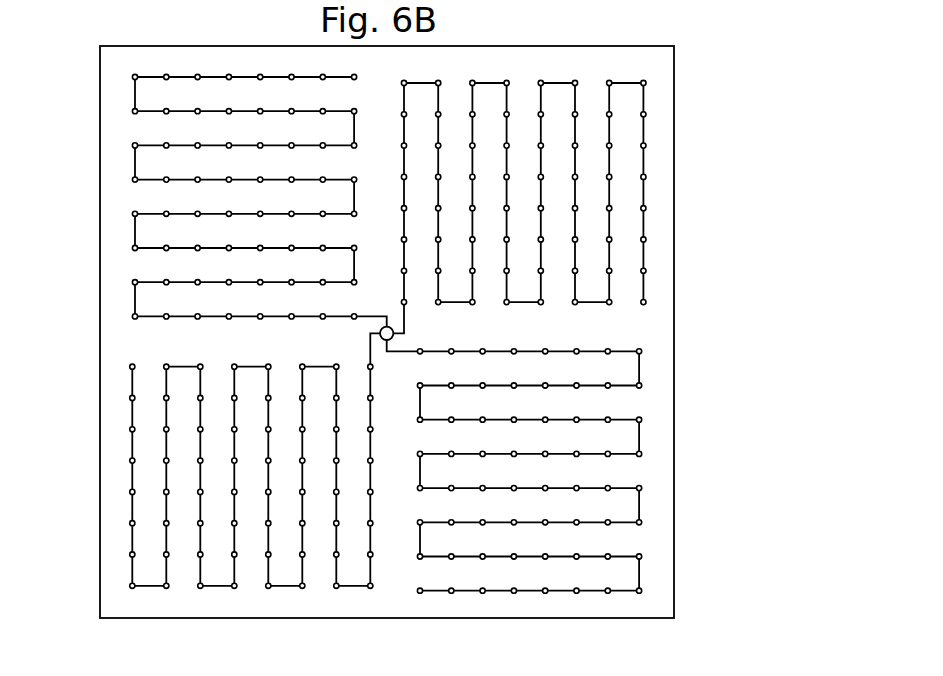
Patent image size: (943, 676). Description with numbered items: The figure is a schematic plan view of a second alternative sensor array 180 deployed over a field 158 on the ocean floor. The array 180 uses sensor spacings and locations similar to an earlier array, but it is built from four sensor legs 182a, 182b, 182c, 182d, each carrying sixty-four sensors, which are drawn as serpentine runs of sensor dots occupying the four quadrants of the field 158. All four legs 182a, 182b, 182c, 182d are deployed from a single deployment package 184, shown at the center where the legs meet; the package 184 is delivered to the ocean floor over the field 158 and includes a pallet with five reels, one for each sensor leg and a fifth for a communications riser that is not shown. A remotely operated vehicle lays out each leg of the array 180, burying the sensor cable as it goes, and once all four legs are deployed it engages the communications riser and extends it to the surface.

The field 158 is at (137, 603).
The sensor array 180 is at (690, 268).
The sensor leg 182a is at (644, 128).
The sensor leg 182b is at (640, 509).
The sensor leg 182c is at (188, 77).
The sensor leg 182d is at (132, 514).
The deployment package 184 is at (392, 340).